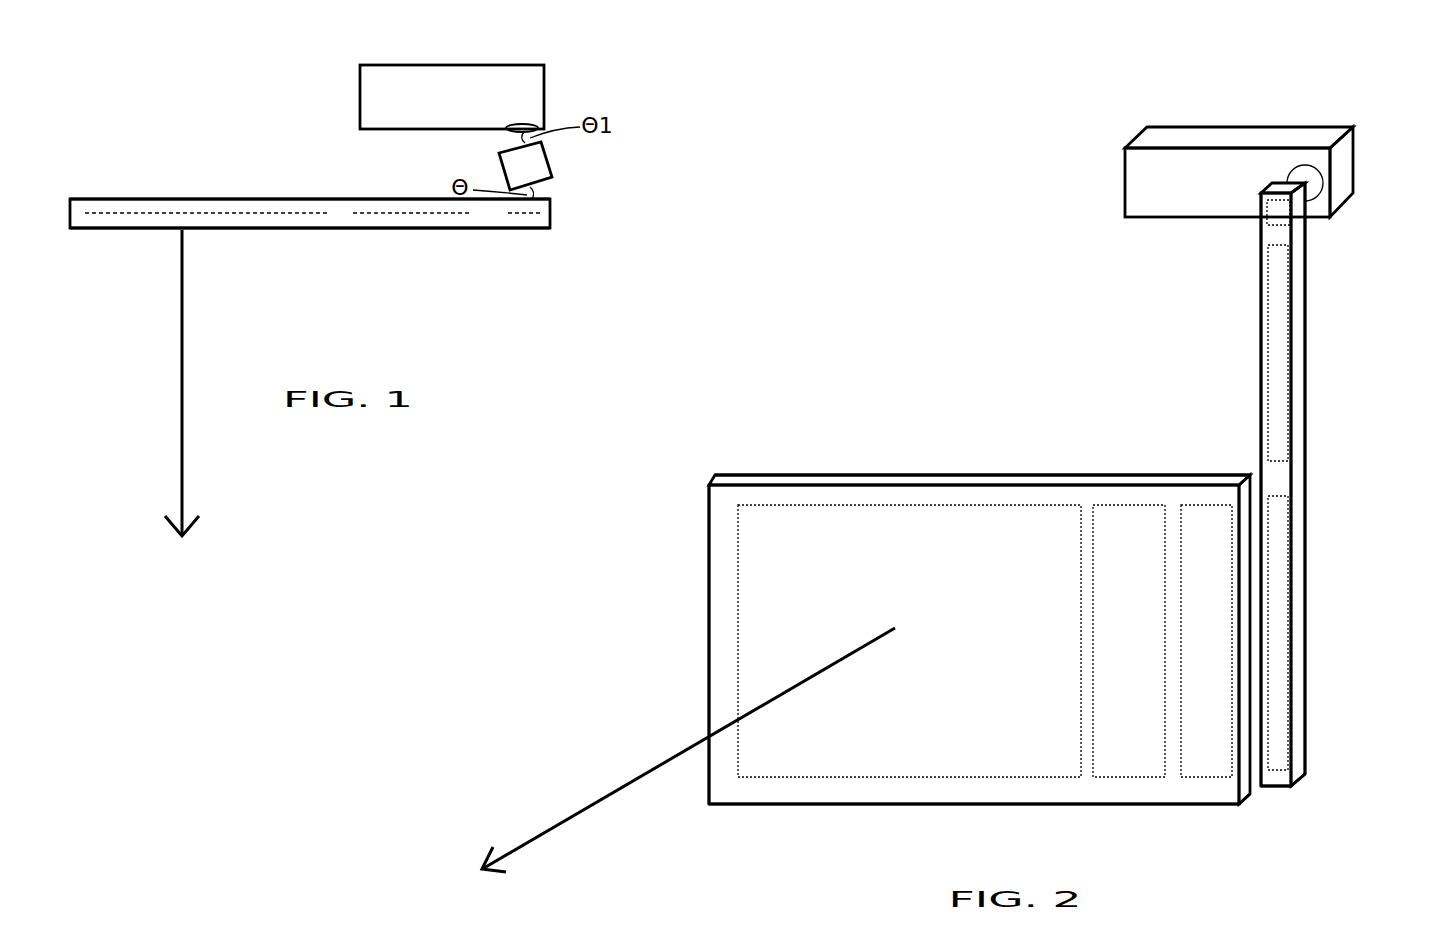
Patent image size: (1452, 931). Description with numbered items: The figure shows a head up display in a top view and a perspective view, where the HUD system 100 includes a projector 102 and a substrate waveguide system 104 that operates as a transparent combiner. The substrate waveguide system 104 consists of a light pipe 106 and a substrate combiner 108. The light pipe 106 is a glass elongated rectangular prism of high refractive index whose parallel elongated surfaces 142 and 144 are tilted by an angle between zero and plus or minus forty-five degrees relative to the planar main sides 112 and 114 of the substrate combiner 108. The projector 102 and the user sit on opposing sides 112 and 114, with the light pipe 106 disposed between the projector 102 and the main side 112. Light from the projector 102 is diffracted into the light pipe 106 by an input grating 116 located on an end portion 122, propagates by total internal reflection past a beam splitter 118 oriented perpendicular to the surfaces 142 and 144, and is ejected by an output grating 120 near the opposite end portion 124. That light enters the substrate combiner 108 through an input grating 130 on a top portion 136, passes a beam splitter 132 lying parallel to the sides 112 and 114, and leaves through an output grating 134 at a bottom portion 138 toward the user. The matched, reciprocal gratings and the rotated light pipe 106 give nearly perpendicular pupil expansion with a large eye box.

In FIG. 1, the HUD system 100 is at (198, 90).
In FIG. 2, the HUD system 100 is at (1175, 74).
In FIG. 1, the projector 102 is at (466, 62).
In FIG. 2, the projector 102 is at (1293, 133).
In FIG. 1, the substrate waveguide system 104 is at (617, 183).
In FIG. 2, the substrate waveguide system 104 is at (1174, 325).
In FIG. 1, the light pipe 106 is at (550, 163).
In FIG. 2, the light pipe 106 is at (1349, 549).
In FIG. 1, the substrate combiner 108 is at (153, 205).
In FIG. 2, the substrate combiner 108 is at (962, 390).
In FIG. 1, the main side 112 is at (331, 198).
In FIG. 2, the main side 112 is at (790, 473).
In FIG. 1, the main side 114 is at (360, 230).
In FIG. 2, the main side 114 is at (722, 507).
In FIG. 2, the input grating 116 is at (1288, 218).
In FIG. 2, the beam splitter 118 is at (1282, 378).
In FIG. 2, the output grating 120 is at (1287, 675).
In FIG. 2, the end portion 122 is at (1300, 210).
In FIG. 2, the end portion 124 is at (1300, 782).
In FIG. 1, the input grating 130 is at (525, 213).
In FIG. 2, the input grating 130 is at (1208, 503).
In FIG. 1, the beam splitter 132 is at (415, 213).
In FIG. 2, the beam splitter 132 is at (1130, 505).
In FIG. 1, the output grating 134 is at (230, 213).
In FIG. 2, the output grating 134 is at (922, 503).
In FIG. 2, the top portion 136 is at (1195, 809).
In FIG. 2, the bottom portion 138 is at (764, 809).
In FIG. 1, the surface 142 is at (547, 182).
In FIG. 2, the surface 142 is at (1272, 233).
In FIG. 1, the surface 144 is at (507, 157).
In FIG. 2, the surface 144 is at (1307, 314).